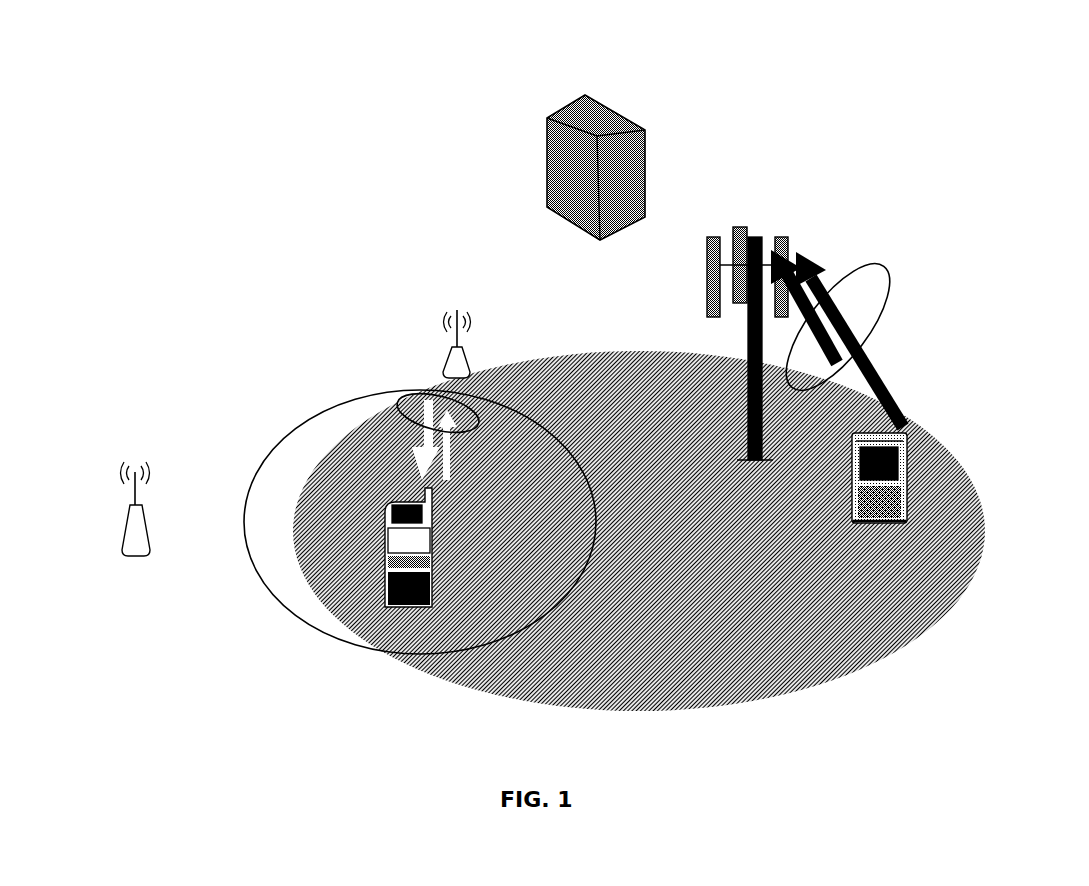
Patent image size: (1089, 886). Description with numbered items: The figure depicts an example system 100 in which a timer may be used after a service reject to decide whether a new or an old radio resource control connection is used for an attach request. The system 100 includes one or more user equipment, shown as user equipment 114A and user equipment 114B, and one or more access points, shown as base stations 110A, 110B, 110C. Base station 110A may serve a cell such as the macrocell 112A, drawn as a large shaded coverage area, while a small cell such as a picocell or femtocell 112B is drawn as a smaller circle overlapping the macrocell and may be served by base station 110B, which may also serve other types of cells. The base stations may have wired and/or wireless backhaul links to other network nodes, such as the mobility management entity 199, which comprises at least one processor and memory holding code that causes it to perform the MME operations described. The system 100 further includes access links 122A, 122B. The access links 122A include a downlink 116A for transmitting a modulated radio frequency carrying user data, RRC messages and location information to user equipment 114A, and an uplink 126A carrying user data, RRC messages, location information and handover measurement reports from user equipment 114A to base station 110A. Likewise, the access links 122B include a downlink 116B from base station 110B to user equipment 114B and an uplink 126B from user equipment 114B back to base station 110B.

The system 100 is at (723, 33).
The base station 110A is at (823, 212).
The base station 110B is at (520, 312).
The base station 110C is at (202, 462).
The macrocell 112A is at (833, 678).
The femtocell 112B is at (282, 602).
The user equipment 114A is at (910, 463).
The user equipment 114B is at (405, 613).
The downlink 116A is at (826, 418).
The downlink 116B is at (426, 427).
The access links 122A is at (882, 266).
The access links 122B is at (405, 398).
The uplink 126A is at (893, 398).
The uplink 126B is at (453, 477).
The mobility management entity 199 is at (645, 130).